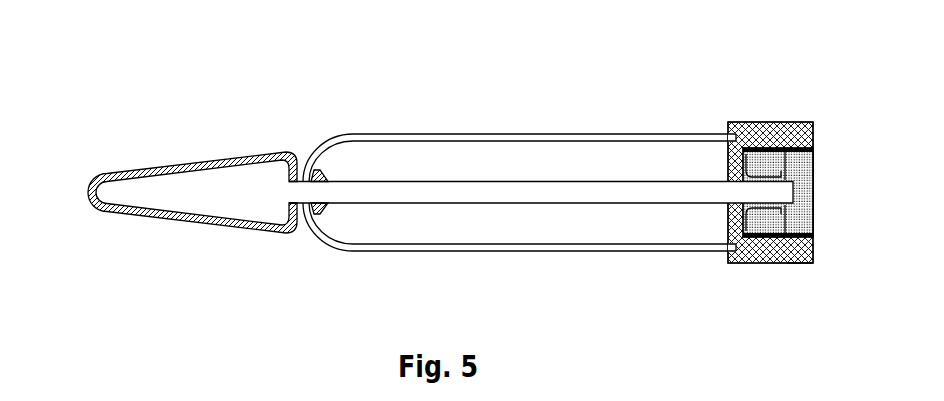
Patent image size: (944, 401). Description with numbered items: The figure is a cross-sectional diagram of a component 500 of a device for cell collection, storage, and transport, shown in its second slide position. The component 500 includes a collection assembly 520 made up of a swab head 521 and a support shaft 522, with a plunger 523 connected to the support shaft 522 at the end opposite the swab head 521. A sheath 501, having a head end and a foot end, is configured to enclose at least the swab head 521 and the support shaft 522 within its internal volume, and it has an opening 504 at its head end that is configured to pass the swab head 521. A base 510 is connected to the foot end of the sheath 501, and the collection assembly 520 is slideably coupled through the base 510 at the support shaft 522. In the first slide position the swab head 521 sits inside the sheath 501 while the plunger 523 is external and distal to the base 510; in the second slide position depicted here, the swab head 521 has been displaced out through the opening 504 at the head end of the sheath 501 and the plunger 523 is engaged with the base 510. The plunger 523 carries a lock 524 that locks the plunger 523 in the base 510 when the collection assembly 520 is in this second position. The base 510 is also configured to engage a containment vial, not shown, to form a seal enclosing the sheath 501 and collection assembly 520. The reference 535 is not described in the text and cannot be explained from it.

The component 500 is at (463, 175).
The sheath 501 is at (357, 133).
The opening 504 is at (297, 205).
The base 510 is at (780, 120).
The collection assembly 520 is at (487, 180).
The swab head 521 is at (237, 185).
The support shaft 522 is at (587, 198).
The plunger 523 is at (813, 172).
The lock 524 is at (787, 265).
The lower dome seal 535 is at (327, 208).